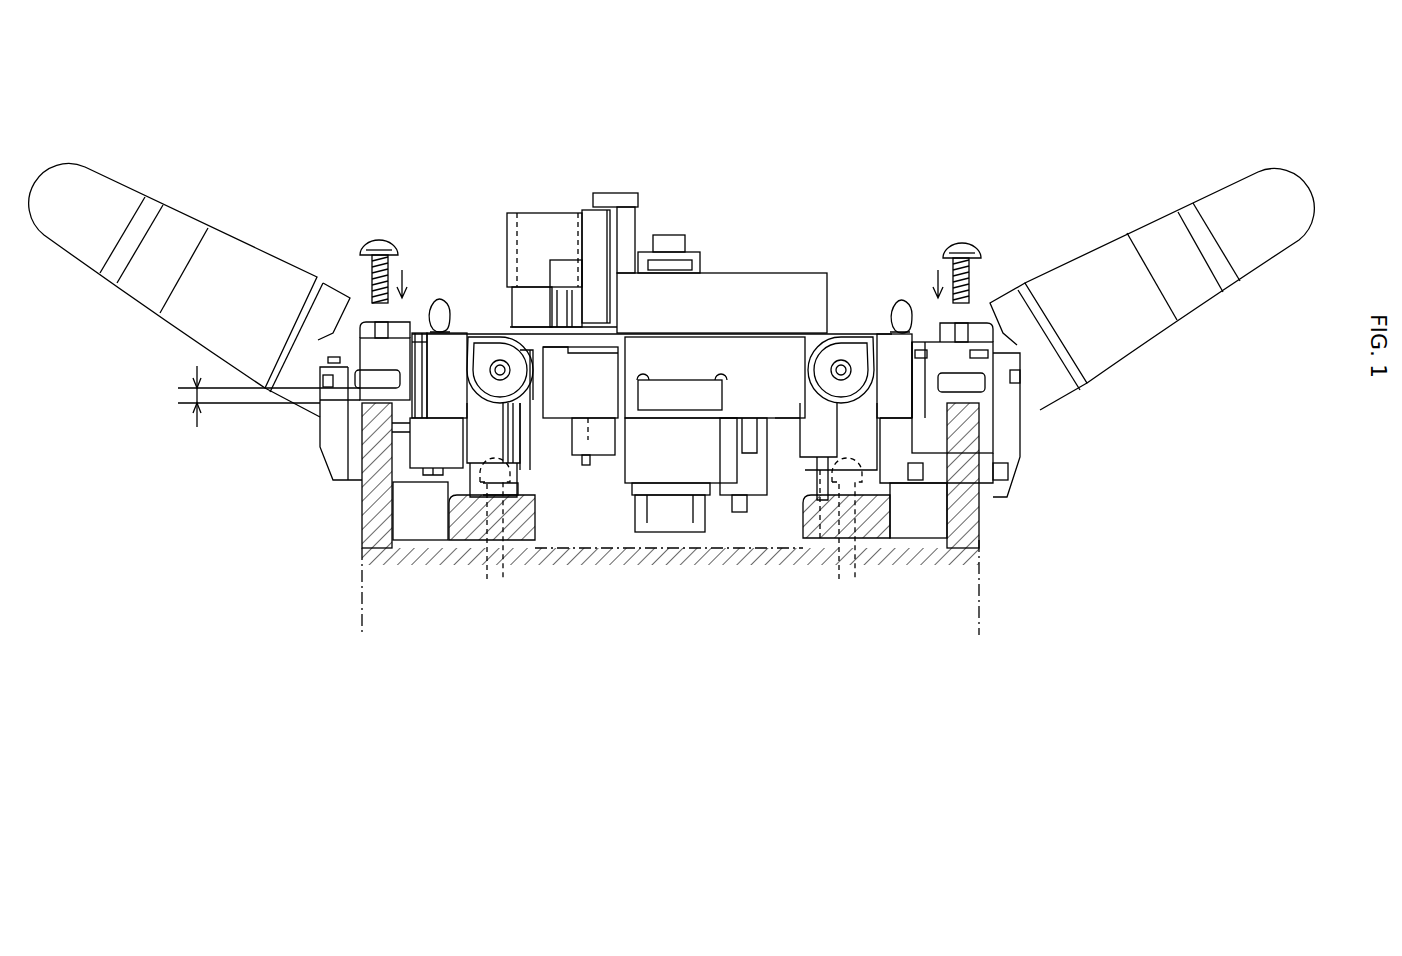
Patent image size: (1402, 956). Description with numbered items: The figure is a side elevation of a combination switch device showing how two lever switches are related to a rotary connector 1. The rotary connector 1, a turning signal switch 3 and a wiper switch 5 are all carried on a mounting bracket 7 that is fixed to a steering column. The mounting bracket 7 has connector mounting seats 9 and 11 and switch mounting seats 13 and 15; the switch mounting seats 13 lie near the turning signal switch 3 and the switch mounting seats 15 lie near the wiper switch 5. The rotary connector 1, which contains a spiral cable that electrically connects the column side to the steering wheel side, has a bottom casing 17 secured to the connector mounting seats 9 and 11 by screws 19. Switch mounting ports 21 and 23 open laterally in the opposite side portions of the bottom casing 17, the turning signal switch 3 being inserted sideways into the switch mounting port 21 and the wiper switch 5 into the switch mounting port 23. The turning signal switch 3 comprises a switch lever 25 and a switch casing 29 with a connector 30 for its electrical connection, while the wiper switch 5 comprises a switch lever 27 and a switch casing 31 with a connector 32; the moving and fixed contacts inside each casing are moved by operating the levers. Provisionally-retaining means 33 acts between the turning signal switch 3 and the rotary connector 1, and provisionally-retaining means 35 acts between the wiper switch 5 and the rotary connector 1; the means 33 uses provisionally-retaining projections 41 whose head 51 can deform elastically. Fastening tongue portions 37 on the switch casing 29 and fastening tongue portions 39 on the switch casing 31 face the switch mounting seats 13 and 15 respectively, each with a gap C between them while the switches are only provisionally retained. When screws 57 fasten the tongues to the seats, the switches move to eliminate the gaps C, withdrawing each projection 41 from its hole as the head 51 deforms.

The rotary connector 1 is at (750, 268).
The turning signal switch 3 is at (1226, 170).
The wiper switch 5 is at (120, 168).
The mounting bracket 7 is at (984, 603).
The connector mounting seat 9 is at (797, 545).
The connector mounting seat 11 is at (538, 522).
The switch mounting seat 13 is at (982, 527).
The switch mounting seat 15 is at (360, 504).
The bottom casing 17 is at (462, 465).
The screw 19 is at (487, 580).
The switch mounting port 21 is at (930, 340).
The switch mounting port 23 is at (422, 340).
The switch lever 25 is at (1108, 258).
The switch lever 27 is at (178, 230).
The switch casing 29 is at (962, 340).
The connector 30 is at (920, 522).
The switch casing 31 is at (353, 338).
The connector 32 is at (365, 562).
The provisionally-retaining means 33 is at (895, 296).
The provisionally-retaining means 35 is at (437, 290).
The fastening tongue portion 37 is at (984, 386).
The fastening tongue portion 39 is at (365, 378).
The provisionally-retaining projection 41 is at (445, 312).
The head 51 is at (446, 318).
The screw 57 is at (372, 243).
The gap C is at (257, 396).